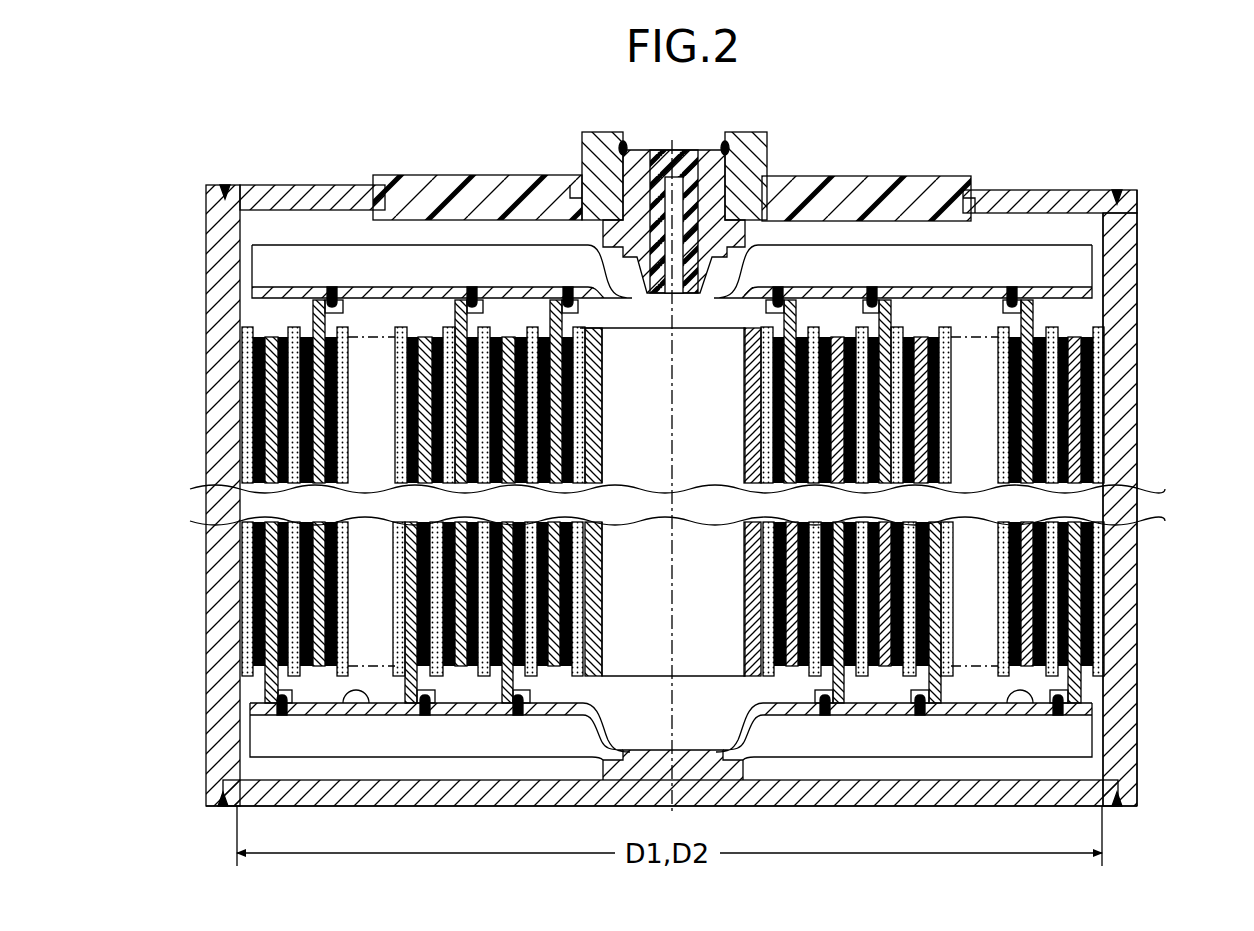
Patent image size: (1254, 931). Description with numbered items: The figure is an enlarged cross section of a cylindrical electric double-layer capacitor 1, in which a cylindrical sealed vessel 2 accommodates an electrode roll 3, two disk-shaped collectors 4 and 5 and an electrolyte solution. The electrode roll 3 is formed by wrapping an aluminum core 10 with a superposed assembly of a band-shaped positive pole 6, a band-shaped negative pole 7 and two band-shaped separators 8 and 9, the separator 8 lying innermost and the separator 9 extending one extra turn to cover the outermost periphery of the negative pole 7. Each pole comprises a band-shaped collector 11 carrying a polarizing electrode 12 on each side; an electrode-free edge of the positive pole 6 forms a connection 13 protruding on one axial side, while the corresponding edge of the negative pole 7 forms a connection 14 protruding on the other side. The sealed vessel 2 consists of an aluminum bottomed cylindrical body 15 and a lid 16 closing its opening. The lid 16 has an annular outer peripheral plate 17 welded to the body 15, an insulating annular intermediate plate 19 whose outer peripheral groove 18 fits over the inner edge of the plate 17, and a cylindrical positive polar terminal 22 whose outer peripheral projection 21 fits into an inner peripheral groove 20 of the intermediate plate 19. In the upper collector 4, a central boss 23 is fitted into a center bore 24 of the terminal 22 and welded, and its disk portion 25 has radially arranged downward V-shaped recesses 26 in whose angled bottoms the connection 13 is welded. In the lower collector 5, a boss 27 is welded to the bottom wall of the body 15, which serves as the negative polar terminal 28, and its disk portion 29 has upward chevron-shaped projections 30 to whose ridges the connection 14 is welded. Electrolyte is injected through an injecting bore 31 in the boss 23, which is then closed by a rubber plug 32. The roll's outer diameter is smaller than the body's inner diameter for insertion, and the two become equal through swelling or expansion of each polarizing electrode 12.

The cylindrical electric double-layer capacitor 1 is at (1082, 150).
The cylindrical sealed vessel 2 is at (1144, 262).
The electrode roll 3 is at (1107, 388).
The disk-shaped collector 4 is at (340, 243).
The disk-shaped collector 5 is at (460, 758).
The band-shaped positive pole 6 is at (450, 312).
The band-shaped negative pole 7 is at (859, 708).
The band-shaped separator 8 is at (490, 386).
The band-shaped separator 9 is at (422, 388).
The aluminum core 10 is at (656, 381).
The band-shaped collector 11 is at (472, 320).
The polarizing electrode 12 is at (447, 363).
The connection 13 is at (470, 320).
The connection 14 is at (852, 692).
The bottomed cylindrical body 15 is at (1143, 443).
The lid 16 is at (907, 172).
The annular outer peripheral plate 17 is at (1090, 195).
The outer peripheral groove 18 is at (973, 200).
The annular intermediate plate 19 is at (850, 190).
The inner peripheral groove 20 is at (757, 195).
The outer peripheral projection 21 is at (582, 188).
The cylindrical positive polar terminal 22 is at (590, 125).
The boss 23 is at (636, 172).
The center bore 24 is at (634, 140).
The disk portion 25 is at (470, 215).
The V-shaped recess 26 is at (1034, 255).
The boss 27 is at (635, 775).
The negative polar terminal 28 is at (707, 795).
The disk portion 29 is at (968, 760).
The chevron-shaped projection 30 is at (343, 702).
The injecting bore 31 is at (690, 170).
The rubber plug 32 is at (677, 150).